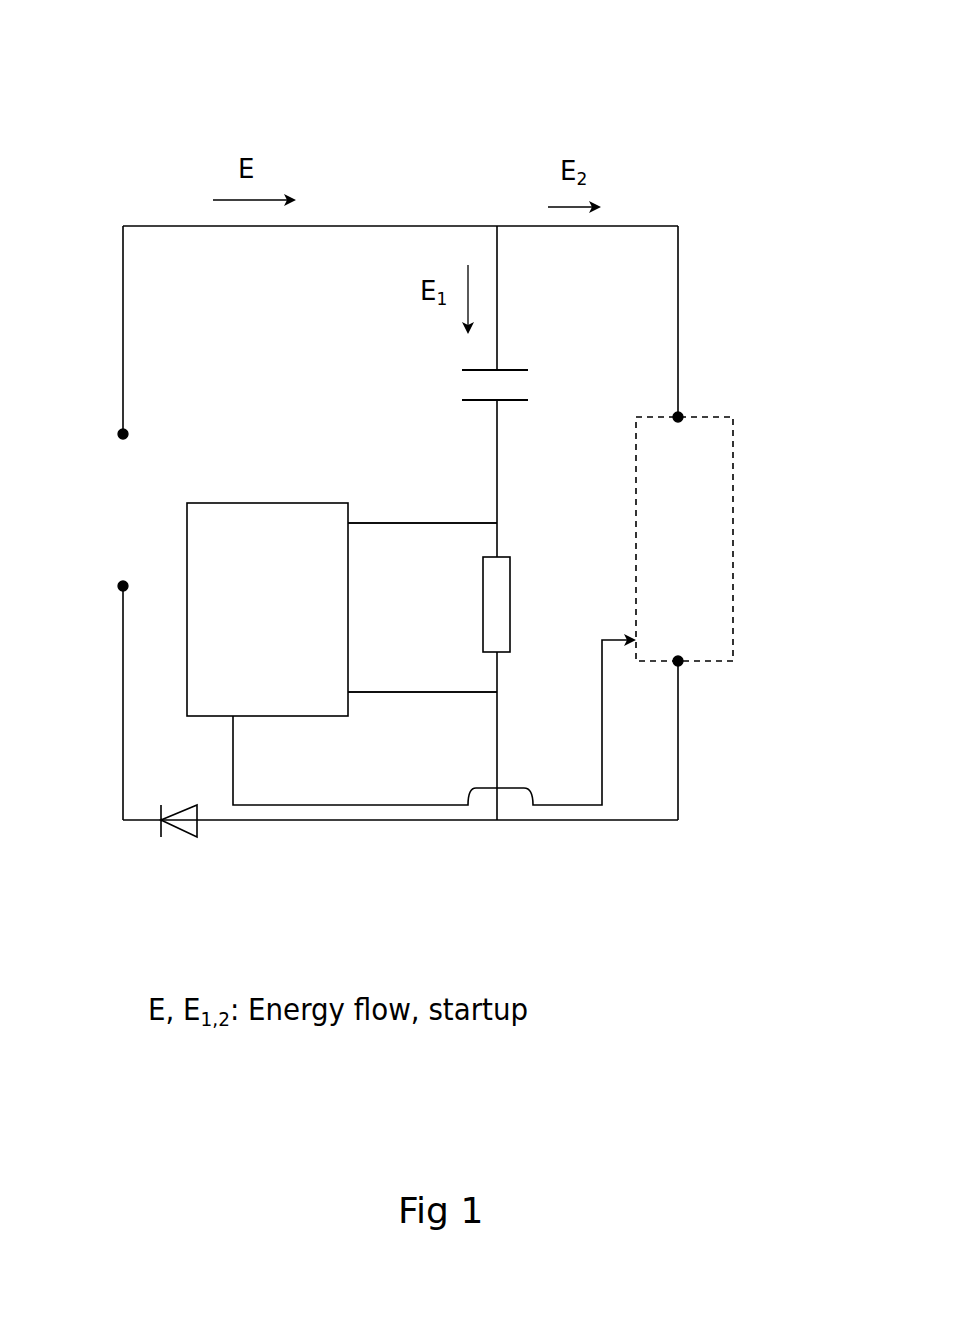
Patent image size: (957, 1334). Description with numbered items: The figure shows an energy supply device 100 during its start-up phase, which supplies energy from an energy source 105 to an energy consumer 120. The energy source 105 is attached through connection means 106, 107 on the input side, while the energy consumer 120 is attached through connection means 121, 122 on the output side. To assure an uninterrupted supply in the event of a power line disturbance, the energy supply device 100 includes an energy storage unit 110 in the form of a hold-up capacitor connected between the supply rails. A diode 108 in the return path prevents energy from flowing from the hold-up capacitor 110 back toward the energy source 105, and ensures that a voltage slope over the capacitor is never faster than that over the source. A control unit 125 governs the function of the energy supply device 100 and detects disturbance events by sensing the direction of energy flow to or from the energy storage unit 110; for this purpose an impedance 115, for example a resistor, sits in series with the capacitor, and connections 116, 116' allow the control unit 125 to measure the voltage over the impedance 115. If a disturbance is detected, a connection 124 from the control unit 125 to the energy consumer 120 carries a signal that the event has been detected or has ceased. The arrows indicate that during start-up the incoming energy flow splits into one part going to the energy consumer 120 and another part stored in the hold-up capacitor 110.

The energy supply device 100 is at (166, 82).
The energy source 105 is at (88, 501).
The connection means for energy source 106 is at (112, 419).
The connection means for energy source 107 is at (107, 598).
The diode 108 is at (191, 854).
The energy storage unit 110 is at (526, 356).
The impedance Z 115 is at (519, 559).
The connection 116 is at (422, 477).
The connection 116' is at (408, 737).
The energy consumer 120 is at (746, 539).
The connection means for energy consumer 121 is at (694, 404).
The connection means for energy consumer 122 is at (696, 678).
The connection 124 is at (554, 811).
The control unit 125 is at (307, 491).